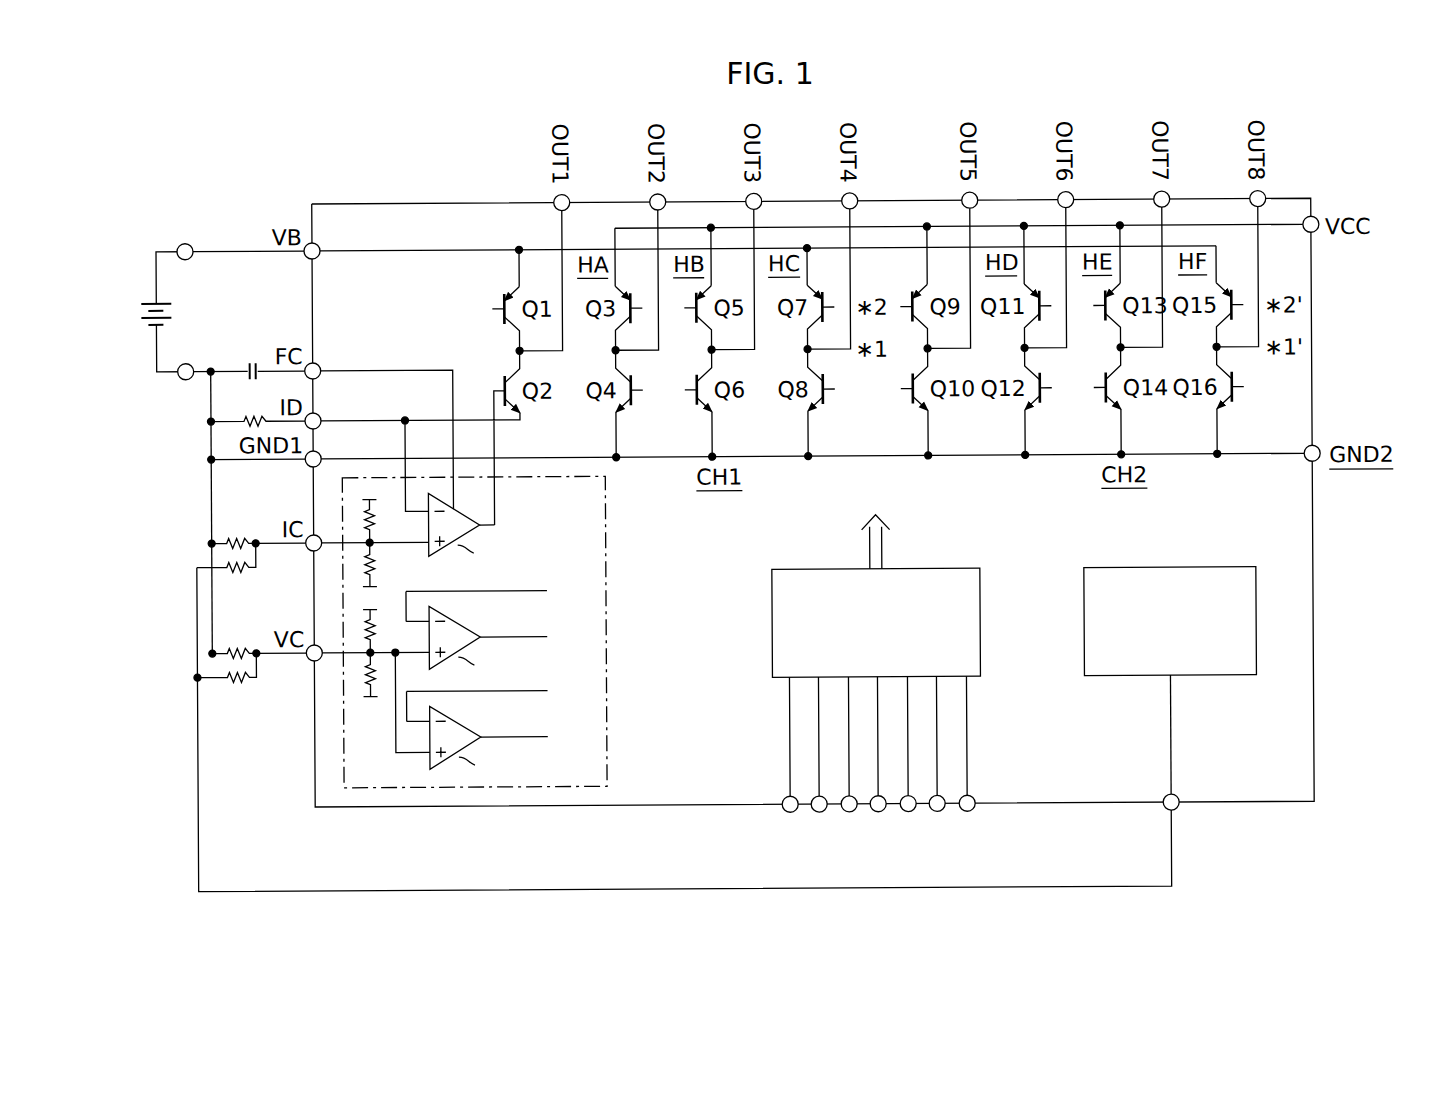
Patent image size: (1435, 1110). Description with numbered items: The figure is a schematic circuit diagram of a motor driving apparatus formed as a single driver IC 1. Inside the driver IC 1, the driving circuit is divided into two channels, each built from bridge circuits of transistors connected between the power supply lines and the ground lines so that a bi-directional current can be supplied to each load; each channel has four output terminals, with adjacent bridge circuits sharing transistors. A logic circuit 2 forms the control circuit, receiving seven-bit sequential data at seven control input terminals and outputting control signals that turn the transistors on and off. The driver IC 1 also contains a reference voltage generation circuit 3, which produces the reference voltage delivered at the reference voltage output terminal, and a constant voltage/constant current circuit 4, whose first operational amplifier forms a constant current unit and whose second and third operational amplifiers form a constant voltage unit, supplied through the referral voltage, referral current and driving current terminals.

The driver IC 1 is at (397, 808).
The logic circuit 2 is at (936, 572).
The reference voltage generation circuit 3 is at (1167, 572).
The constant voltage/constant current circuit 4 is at (606, 622).